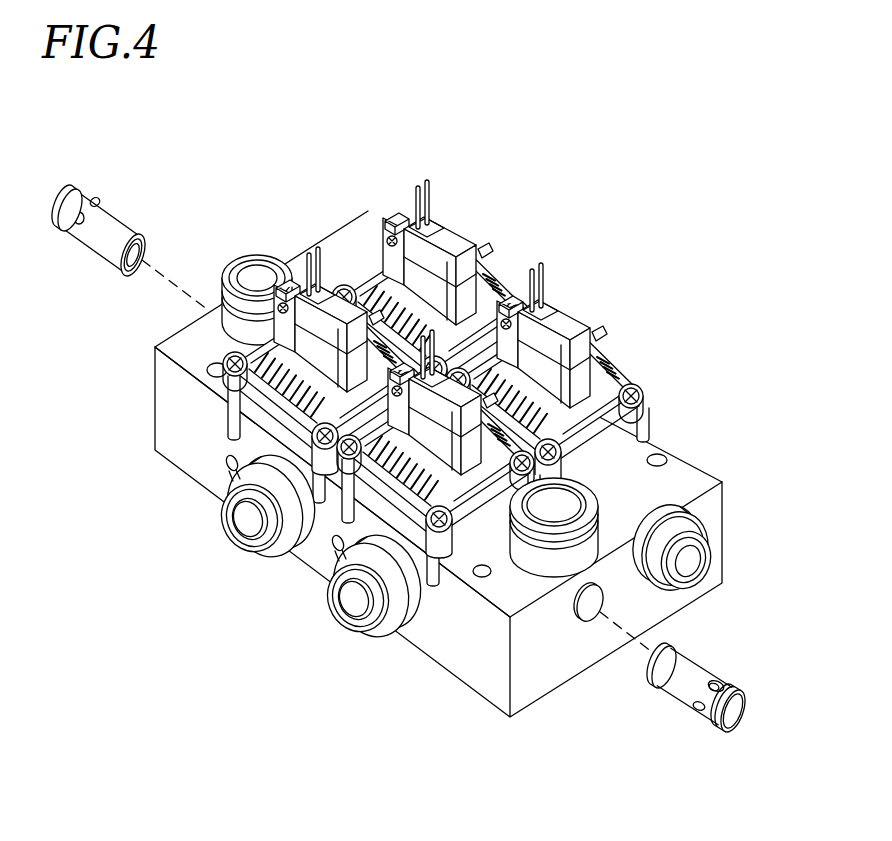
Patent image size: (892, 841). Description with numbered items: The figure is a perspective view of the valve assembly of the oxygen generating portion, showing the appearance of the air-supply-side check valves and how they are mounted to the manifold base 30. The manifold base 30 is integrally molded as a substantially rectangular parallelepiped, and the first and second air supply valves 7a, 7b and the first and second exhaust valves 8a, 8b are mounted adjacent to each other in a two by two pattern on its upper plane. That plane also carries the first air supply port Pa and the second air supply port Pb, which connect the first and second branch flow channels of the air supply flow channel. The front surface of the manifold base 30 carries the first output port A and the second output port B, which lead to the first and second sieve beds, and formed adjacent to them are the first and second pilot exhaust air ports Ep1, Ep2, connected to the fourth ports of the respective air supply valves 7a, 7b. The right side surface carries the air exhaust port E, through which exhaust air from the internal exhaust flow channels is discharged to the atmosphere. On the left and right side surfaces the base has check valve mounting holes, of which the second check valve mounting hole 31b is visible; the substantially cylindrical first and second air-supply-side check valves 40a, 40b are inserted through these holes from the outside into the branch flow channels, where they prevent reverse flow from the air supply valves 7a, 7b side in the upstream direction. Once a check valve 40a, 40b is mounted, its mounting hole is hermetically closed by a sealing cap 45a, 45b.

The manifold base 30 is at (693, 473).
The first air supply port Pa is at (267, 277).
The second air supply port Pb is at (560, 500).
The first air supply valve 7a is at (333, 278).
The second air supply valve 7b is at (453, 505).
The first exhaust valve 8a is at (452, 210).
The second exhaust valve 8b is at (567, 307).
The first output port A is at (250, 518).
The second output port B is at (363, 603).
The first pilot exhaust air port Ep1 is at (228, 473).
The second pilot exhaust air port Ep2 is at (340, 555).
The air exhaust port E is at (683, 553).
The second check valve mounting hole 31b is at (592, 605).
The first air-supply-side check valve 40a is at (128, 213).
The second air-supply-side check valve 40b is at (705, 658).
The sealing cap 45a is at (63, 203).
The sealing cap 45b is at (737, 715).